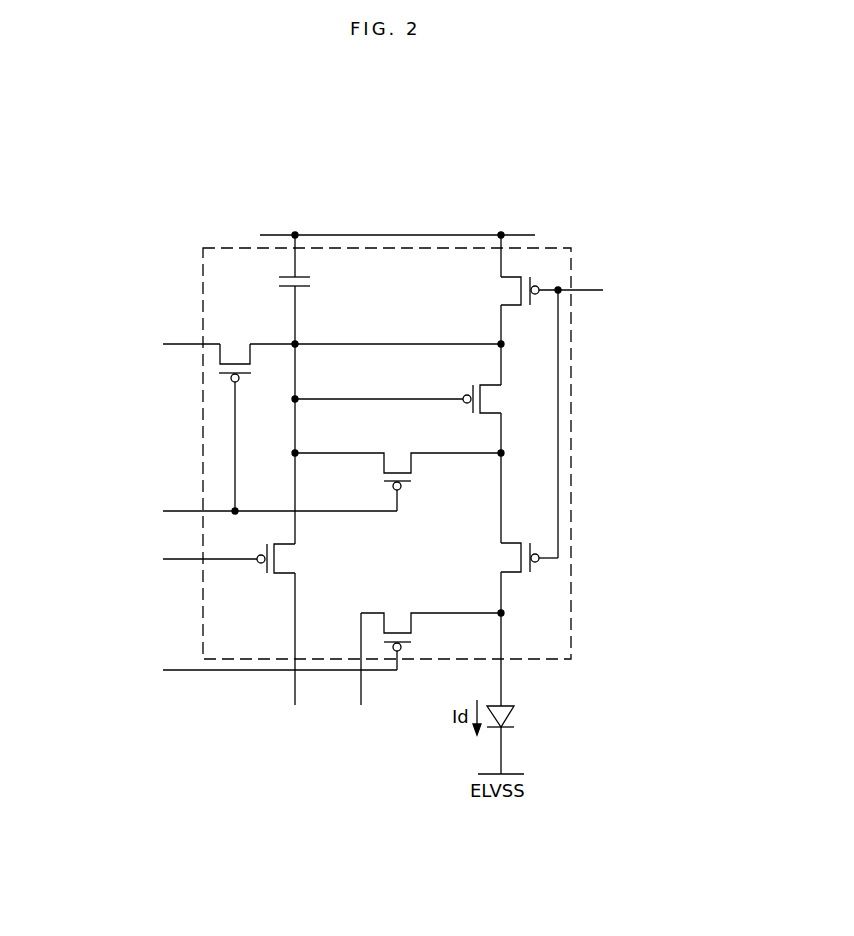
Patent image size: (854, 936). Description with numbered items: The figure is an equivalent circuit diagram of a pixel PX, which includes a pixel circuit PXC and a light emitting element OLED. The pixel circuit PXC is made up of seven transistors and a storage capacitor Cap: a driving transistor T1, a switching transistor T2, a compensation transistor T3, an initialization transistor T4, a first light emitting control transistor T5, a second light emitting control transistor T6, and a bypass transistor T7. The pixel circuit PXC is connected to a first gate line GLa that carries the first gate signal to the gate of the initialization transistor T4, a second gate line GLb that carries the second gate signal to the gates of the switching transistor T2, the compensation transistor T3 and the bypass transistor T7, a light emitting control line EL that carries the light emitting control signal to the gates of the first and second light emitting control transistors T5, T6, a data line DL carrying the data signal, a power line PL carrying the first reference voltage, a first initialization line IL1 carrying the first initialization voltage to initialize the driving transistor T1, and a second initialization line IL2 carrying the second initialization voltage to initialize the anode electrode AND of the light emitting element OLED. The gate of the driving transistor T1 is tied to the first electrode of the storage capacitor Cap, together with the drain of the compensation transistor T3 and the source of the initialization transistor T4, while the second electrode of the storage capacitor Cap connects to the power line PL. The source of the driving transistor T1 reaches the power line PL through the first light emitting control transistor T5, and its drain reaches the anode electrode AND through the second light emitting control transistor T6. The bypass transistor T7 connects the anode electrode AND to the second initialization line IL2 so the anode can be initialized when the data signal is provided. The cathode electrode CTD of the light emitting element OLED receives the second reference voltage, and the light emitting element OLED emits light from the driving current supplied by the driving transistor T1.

The pixel PX is at (594, 200).
The pixel circuit PXC is at (571, 440).
The power line PL is at (465, 235).
The light emitting control line EL is at (586, 288).
The data line DL is at (183, 344).
The first gate line GLa is at (183, 560).
The second gate line GLb is at (183, 511).
The first initialization line IL1 is at (293, 685).
The second initialization line IL2 is at (359, 688).
The storage capacitor Cap is at (313, 285).
The driving transistor T1 is at (411, 399).
The switching transistor T2 is at (235, 414).
The compensation transistor T3 is at (398, 470).
The initialization transistor T4 is at (289, 558).
The first light emitting control transistor T5 is at (506, 291).
The second light emitting control transistor T6 is at (515, 557).
The bypass transistor T7 is at (431, 630).
The light emitting element OLED is at (550, 718).
The anode electrode AND is at (507, 700).
The cathode electrode CTD is at (508, 731).